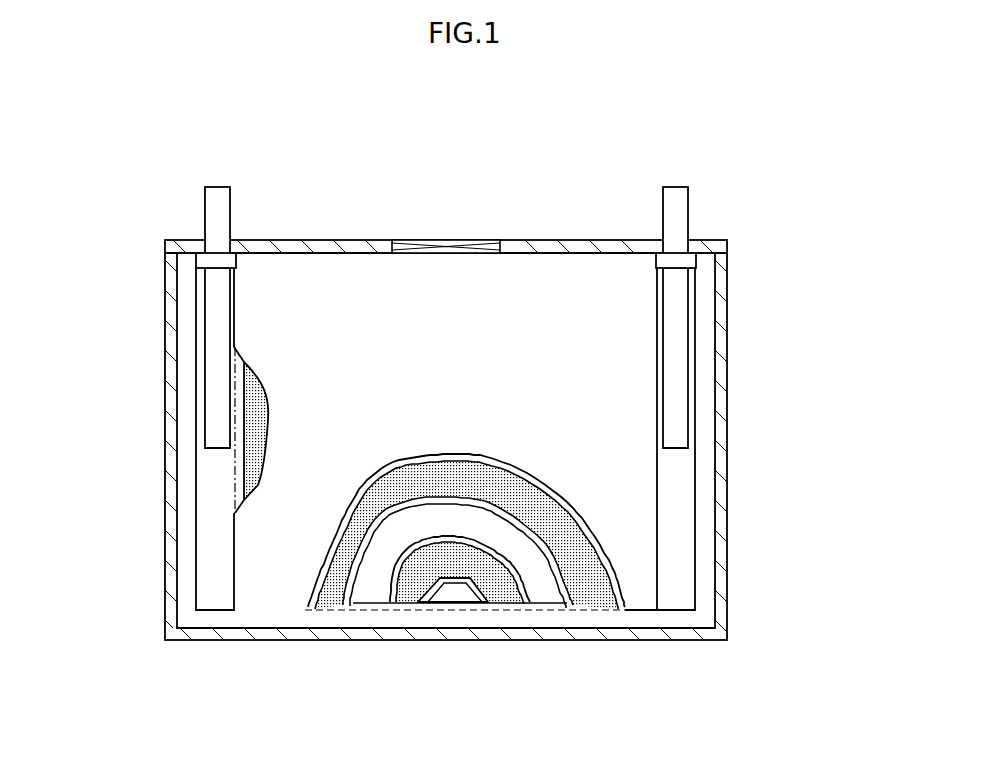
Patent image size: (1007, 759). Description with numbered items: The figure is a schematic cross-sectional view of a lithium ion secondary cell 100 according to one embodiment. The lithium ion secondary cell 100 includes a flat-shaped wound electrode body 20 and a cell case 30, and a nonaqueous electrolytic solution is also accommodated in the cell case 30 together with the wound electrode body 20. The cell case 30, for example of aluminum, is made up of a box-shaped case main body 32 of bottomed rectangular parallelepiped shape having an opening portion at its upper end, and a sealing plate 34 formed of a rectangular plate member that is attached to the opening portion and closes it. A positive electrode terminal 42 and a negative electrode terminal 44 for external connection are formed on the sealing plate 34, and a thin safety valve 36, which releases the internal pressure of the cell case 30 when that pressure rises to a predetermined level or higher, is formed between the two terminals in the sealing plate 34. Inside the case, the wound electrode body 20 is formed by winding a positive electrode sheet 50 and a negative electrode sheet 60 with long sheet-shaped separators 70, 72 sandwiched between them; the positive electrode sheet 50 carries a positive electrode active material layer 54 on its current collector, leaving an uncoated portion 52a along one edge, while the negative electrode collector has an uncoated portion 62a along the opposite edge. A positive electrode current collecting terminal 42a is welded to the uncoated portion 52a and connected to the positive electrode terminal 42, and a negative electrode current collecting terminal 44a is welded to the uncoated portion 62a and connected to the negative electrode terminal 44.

The lithium ion secondary cell 100 is at (729, 203).
The wound electrode body 20 is at (330, 298).
The cell case 30 is at (731, 351).
The case main body 32 is at (728, 615).
The sealing plate 34 is at (622, 240).
The safety valve 36 is at (446, 240).
The positive electrode terminal 42 is at (216, 188).
The positive electrode current collecting terminal 42a is at (220, 401).
The negative electrode terminal 44 is at (675, 188).
The negative electrode current collecting terminal 44a is at (677, 410).
The positive electrode sheet 50 is at (332, 593).
The uncoated portion 52a is at (212, 585).
The positive electrode active material layer 54 is at (257, 402).
The negative electrode sheet 60 is at (412, 592).
The uncoated portion 62a is at (683, 507).
The separator 70 is at (272, 540).
The separator 72 is at (377, 593).